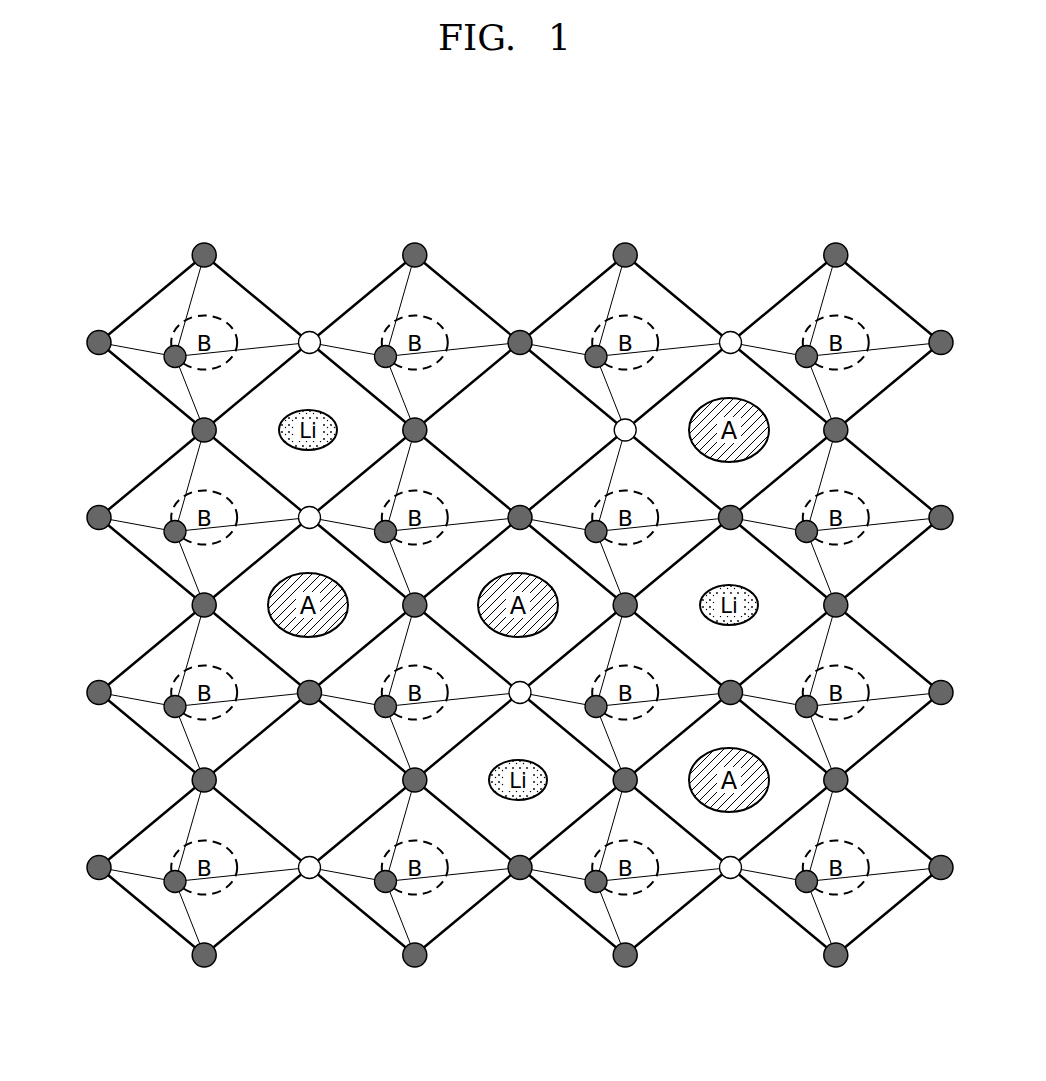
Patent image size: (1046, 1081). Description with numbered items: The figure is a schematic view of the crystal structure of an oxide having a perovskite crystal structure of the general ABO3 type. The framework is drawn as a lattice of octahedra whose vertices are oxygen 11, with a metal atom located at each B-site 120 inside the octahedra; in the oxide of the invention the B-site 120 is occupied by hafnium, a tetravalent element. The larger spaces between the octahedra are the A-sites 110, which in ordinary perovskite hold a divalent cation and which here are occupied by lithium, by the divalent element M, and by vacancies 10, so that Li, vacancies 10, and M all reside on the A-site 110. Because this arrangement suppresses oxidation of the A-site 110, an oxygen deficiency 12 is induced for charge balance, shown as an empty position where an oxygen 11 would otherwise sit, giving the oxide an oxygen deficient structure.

The vacancy 10 is at (518, 425).
The oxygen 11 is at (204, 243).
The oxygen deficiency 12 is at (310, 331).
The A-site 110 is at (757, 398).
The B-site 120 is at (858, 318).